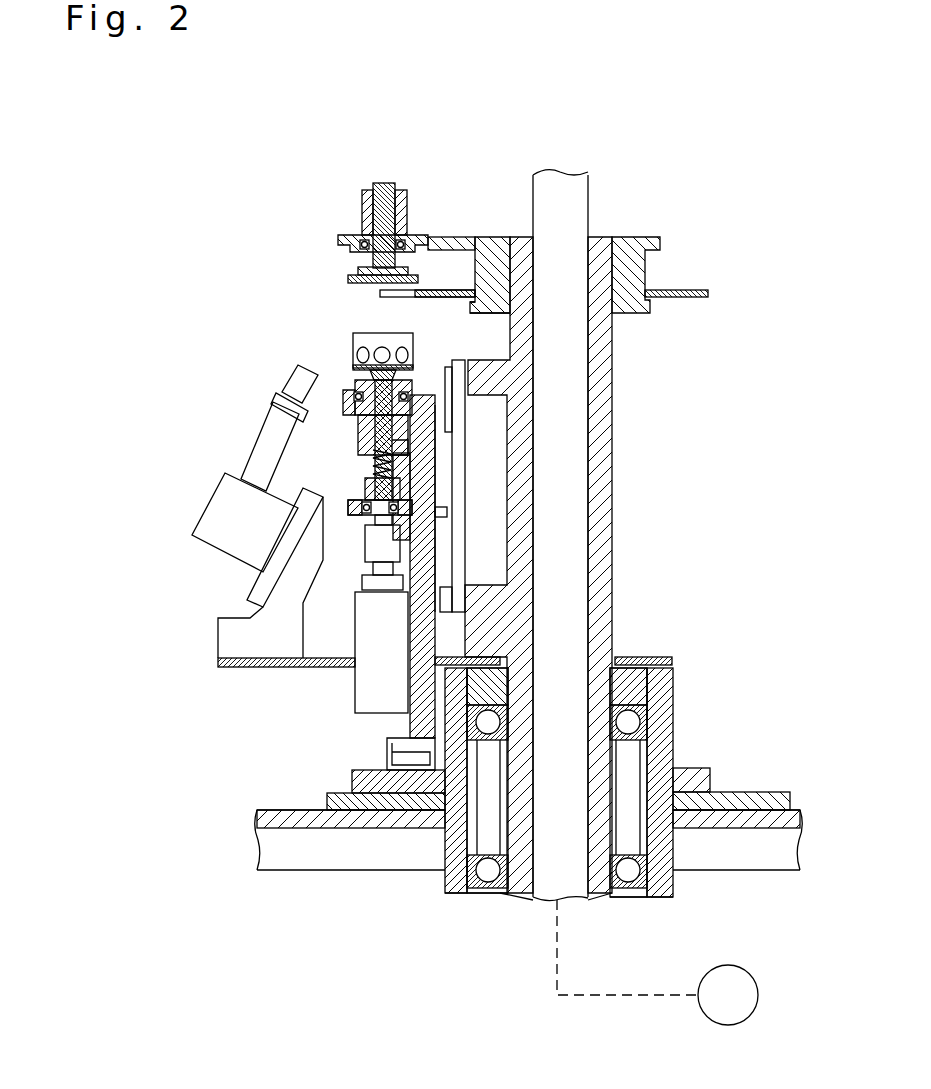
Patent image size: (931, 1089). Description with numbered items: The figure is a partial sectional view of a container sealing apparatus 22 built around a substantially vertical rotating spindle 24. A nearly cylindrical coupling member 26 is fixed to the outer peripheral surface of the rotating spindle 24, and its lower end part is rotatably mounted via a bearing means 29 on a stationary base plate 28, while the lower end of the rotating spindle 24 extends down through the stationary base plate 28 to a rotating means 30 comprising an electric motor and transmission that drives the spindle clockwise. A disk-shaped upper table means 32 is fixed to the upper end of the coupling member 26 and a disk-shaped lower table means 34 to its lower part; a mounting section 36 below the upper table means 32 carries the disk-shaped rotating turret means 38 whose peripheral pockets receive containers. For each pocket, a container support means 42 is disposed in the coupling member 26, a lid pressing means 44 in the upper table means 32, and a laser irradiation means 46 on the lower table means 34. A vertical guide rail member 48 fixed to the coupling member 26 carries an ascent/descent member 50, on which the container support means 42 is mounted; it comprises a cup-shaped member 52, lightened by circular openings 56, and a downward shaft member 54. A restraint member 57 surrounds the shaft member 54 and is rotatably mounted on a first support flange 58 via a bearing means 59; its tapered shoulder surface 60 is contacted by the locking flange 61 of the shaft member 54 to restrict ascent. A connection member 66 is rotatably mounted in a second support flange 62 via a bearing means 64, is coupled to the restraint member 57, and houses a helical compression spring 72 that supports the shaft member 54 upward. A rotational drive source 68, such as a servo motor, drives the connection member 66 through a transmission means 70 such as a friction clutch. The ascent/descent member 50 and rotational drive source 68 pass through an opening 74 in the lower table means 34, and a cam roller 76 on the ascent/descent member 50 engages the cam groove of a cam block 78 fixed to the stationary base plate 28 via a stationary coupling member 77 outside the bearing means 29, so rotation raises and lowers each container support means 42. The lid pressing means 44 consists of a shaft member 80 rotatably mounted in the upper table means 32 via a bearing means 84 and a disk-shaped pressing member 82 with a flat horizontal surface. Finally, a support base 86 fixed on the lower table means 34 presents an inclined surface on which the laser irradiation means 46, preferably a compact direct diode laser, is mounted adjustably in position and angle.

The sealing apparatus 22 is at (215, 264).
The rotating spindle 24 is at (580, 462).
The coupling member 26 is at (614, 503).
The stationary base plate 28 is at (282, 873).
The bearing means 29 is at (648, 695).
The rotating means 30 is at (657, 962).
The upper table means 32 is at (470, 236).
The lower table means 34 is at (250, 668).
The mounting section 36 is at (490, 314).
The rotating turret means 38 is at (440, 290).
The container support means 42 is at (350, 358).
The lid pressing means 44 is at (345, 276).
The laser irradiation means 46 is at (210, 500).
The guide rail member 48 is at (462, 422).
The ascent/descent member 50 is at (437, 558).
The cup-shaped member 52 is at (353, 340).
The shaft member 54 is at (362, 434).
The circular openings 56 is at (386, 350).
The restraint member 57 is at (360, 448).
The first support flange 58 is at (343, 410).
The bearing means 59 is at (343, 403).
The tapered shoulder surface 60 is at (372, 476).
The locking flange 61 is at (400, 456).
The second support flange 62 is at (357, 516).
The bearing means 64 is at (402, 492).
The connection member 66 is at (437, 528).
The rotational drive source 68 is at (381, 652).
The transmission means 70 is at (382, 557).
The helical compression spring 72 is at (395, 478).
The opening 74 is at (353, 662).
The cam roller 76 is at (388, 747).
The stationary coupling member 77 is at (430, 812).
The cam block 78 is at (370, 810).
The shaft member 80 is at (372, 200).
The pressing member 82 is at (362, 284).
The bearing means 84 is at (362, 220).
The support base 86 is at (218, 638).